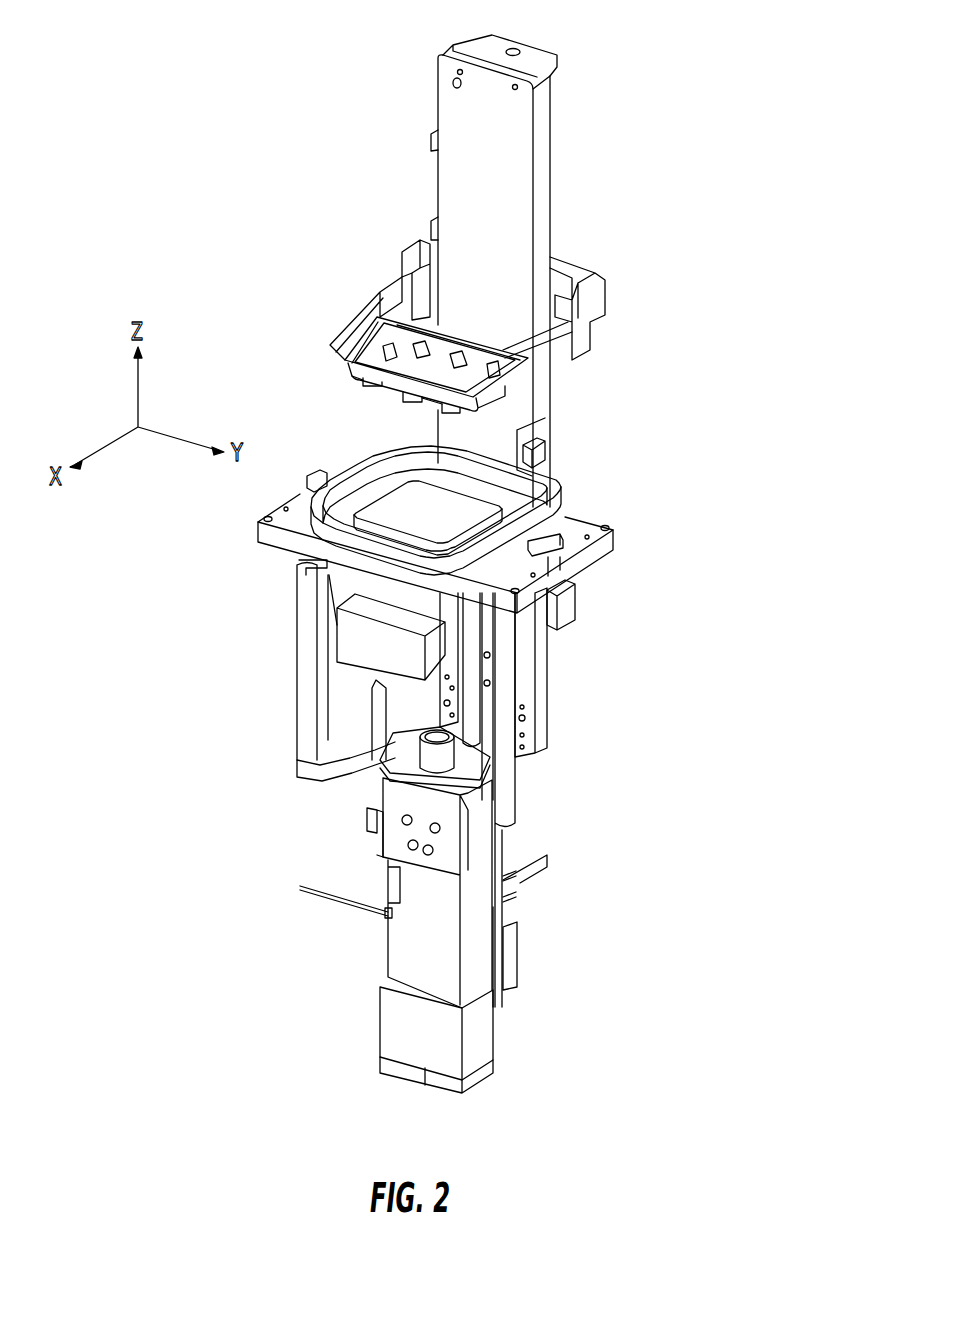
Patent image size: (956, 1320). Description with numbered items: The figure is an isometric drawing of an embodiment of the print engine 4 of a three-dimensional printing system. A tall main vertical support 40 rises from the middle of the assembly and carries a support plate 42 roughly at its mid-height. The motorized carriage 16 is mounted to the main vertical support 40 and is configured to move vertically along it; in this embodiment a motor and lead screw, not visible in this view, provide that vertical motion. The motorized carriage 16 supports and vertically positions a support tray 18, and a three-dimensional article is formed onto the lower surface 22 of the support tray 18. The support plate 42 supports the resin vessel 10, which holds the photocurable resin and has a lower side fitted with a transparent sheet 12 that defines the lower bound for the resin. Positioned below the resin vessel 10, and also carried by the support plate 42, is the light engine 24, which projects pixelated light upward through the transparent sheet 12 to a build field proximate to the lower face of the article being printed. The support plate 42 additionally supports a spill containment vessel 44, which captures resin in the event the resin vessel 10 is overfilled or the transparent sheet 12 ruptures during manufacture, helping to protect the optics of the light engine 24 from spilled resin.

The print engine 4 is at (603, 91).
The main vertical support 40 is at (522, 193).
The motorized carriage 16 is at (587, 303).
The support tray 18 is at (350, 373).
The lower surface 22 is at (355, 387).
The resin vessel 10 is at (560, 502).
The transparent sheet 12 is at (390, 516).
The support plate 42 is at (600, 547).
The spill containment vessel 44 is at (490, 662).
The light engine 24 is at (477, 925).